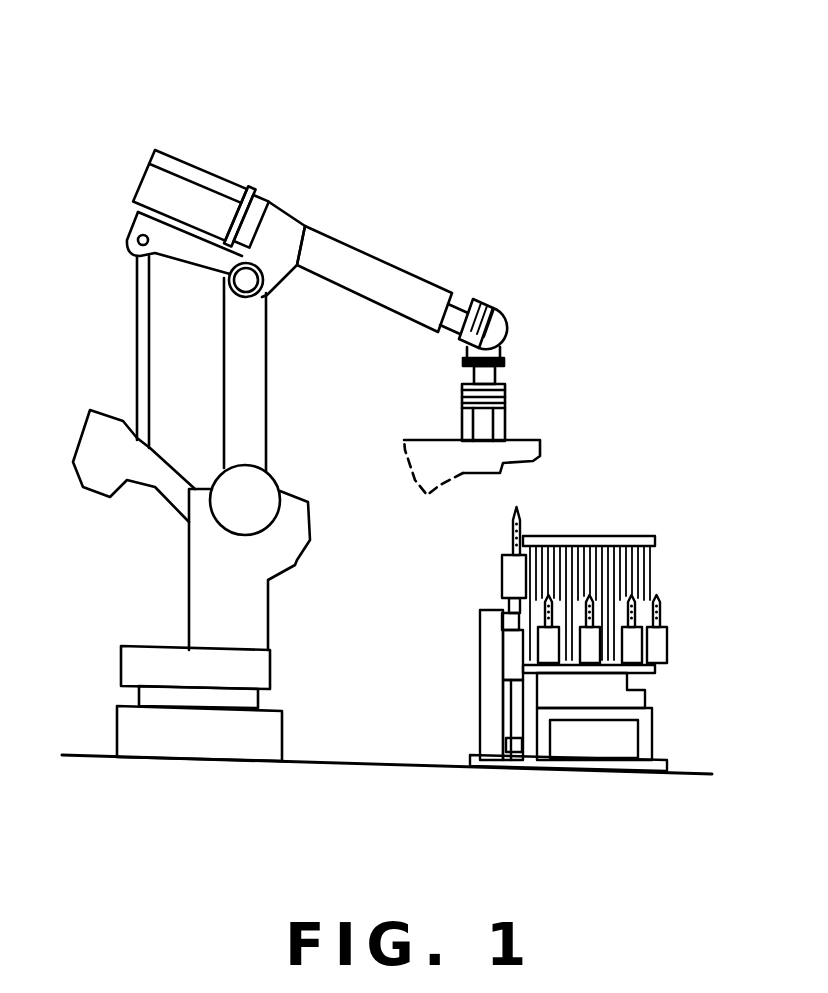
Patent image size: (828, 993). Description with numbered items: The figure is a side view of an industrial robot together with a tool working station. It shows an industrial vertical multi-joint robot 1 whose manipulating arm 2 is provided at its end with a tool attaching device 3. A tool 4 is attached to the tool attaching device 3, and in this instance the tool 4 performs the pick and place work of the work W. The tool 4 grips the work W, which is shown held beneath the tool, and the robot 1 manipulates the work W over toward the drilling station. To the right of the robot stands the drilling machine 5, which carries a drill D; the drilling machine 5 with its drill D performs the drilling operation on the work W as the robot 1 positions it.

The industrial vertical multi-joint robot 1 is at (282, 92).
The manipulating arm 2 is at (341, 258).
The tool attaching device 3 is at (490, 380).
The tool 4 is at (460, 425).
The work W is at (517, 437).
The drilling machine 5 is at (653, 525).
The drill D is at (510, 570).